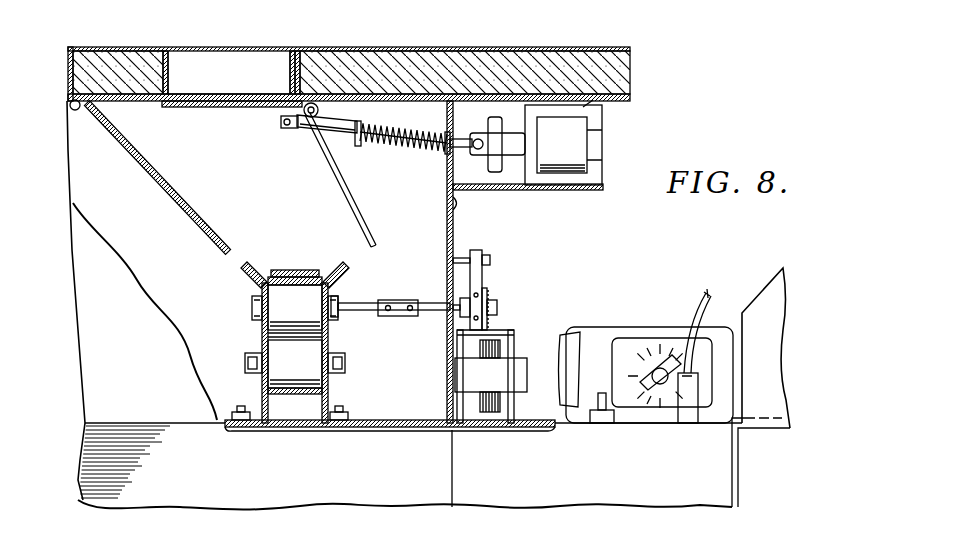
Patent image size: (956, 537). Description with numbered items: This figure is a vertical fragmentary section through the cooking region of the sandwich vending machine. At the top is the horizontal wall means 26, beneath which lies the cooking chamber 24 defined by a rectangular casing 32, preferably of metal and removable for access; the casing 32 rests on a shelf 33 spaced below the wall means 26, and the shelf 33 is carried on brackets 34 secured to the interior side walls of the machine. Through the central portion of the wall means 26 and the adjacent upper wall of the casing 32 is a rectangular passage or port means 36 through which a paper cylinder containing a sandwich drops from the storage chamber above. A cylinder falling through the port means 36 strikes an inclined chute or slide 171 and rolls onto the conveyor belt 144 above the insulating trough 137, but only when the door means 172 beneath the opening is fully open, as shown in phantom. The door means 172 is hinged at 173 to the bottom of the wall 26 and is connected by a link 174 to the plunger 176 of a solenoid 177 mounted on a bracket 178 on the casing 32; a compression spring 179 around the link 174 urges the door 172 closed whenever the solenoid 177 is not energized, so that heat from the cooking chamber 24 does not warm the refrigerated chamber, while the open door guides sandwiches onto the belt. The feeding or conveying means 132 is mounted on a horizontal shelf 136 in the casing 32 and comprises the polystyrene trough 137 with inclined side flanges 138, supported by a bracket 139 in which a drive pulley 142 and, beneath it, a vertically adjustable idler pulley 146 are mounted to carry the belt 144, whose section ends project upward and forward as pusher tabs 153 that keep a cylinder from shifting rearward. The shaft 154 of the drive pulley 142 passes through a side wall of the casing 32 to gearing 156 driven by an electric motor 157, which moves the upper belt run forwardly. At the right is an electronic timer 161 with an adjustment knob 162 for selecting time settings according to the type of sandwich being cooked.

The horizontal wall means 26 is at (632, 69).
The passage or port means 36 is at (201, 55).
The door means 172 is at (250, 110).
The hinge 173 is at (313, 103).
The inclined chute or slide 171 is at (158, 180).
The link 174 is at (350, 136).
The compression spring 179 is at (427, 152).
The plunger 176 is at (499, 185).
The solenoid 177 is at (600, 130).
The bracket 178 is at (590, 192).
The rectangular casing 32 is at (456, 238).
The cooking chamber 24 is at (145, 311).
The feeding or conveying means 132 is at (376, 351).
The insulating trough 137 is at (299, 293).
The inclined side flanges 138 is at (251, 273).
The pusher tab 153 is at (302, 277).
The conveyor belt 144 is at (327, 270).
The bracket 139 is at (268, 335).
The drive pulley 142 is at (270, 306).
The idler pulley 146 is at (283, 372).
The horizontal shelf 136 is at (312, 428).
The shaft 154 is at (366, 303).
The gearing 156 is at (484, 297).
The electric motor 157 is at (516, 342).
The electronic timer 161 is at (618, 338).
The adjustment knob 162 is at (662, 388).
The brackets 34 is at (786, 342).
The shelf 33 is at (740, 480).